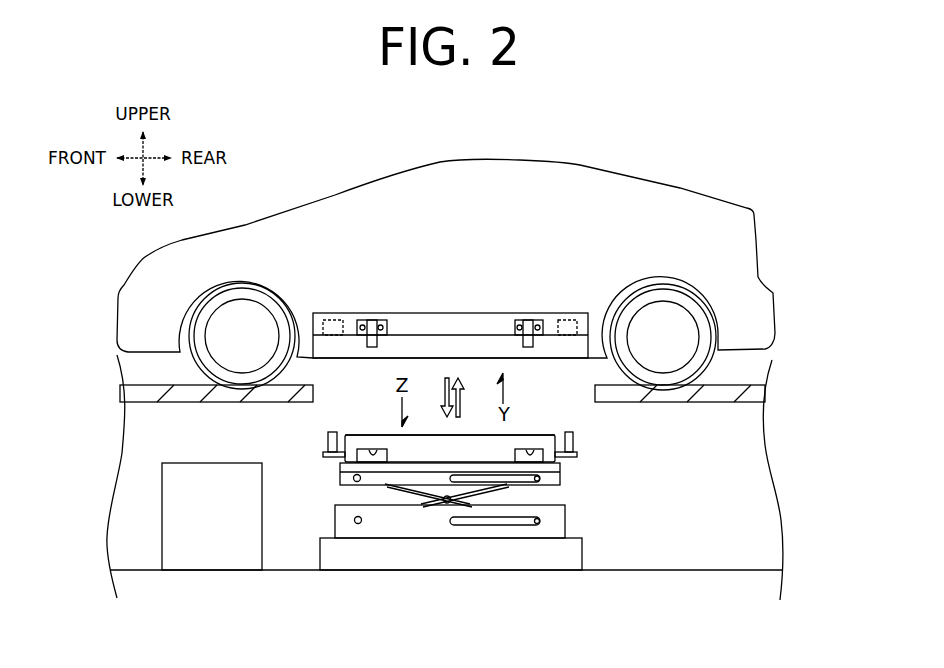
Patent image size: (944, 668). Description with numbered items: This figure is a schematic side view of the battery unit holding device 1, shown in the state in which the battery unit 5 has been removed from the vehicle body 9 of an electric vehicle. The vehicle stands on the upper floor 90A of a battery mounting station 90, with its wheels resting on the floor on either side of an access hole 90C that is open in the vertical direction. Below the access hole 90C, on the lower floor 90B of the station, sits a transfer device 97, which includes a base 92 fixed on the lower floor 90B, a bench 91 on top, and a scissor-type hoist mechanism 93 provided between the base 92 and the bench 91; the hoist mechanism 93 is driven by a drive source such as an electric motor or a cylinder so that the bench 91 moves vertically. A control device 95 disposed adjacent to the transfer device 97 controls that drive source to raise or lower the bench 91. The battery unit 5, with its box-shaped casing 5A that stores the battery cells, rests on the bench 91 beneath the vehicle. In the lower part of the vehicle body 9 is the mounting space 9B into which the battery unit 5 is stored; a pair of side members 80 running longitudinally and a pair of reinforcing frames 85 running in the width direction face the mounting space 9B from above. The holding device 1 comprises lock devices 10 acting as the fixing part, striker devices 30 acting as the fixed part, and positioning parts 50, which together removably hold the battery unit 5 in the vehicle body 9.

The battery unit holding device 1 is at (456, 521).
The battery unit 5 is at (426, 453).
The casing 5A is at (445, 455).
The vehicle body 9 is at (440, 216).
The mounting space 9B is at (593, 357).
The lock device 10 is at (370, 468).
The striker device 30 is at (372, 316).
The positioning part 50 is at (316, 323).
The side member 80 is at (484, 317).
The reinforcing frame 85 is at (333, 316).
The battery mounting station 90 is at (743, 456).
The upper floor 90A is at (702, 382).
The lower floor 90B is at (722, 578).
The access hole 90C is at (590, 395).
The bench 91 is at (565, 470).
The base 92 is at (503, 557).
The hoist mechanism 93 is at (453, 505).
The control device 95 is at (221, 527).
The transfer device 97 is at (325, 496).